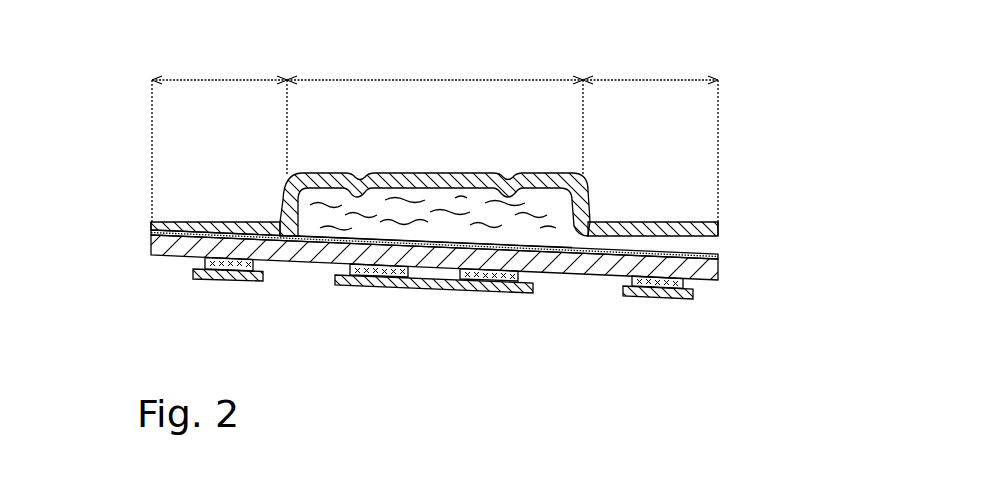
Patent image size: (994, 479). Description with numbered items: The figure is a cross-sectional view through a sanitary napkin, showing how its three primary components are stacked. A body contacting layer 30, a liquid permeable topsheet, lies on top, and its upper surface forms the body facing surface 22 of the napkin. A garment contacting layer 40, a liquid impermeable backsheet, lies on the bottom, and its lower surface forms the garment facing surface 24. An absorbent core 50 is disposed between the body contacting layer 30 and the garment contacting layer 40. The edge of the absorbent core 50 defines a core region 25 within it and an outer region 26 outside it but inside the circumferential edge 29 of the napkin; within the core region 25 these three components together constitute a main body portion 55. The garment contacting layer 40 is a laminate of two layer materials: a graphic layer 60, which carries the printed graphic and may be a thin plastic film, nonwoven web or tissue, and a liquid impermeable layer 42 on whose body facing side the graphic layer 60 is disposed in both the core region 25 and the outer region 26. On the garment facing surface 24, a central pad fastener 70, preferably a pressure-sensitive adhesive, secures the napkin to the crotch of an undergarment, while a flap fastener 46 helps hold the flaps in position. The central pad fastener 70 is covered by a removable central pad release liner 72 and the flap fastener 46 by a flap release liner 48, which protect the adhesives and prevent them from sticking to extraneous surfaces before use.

The body facing surface 22 is at (185, 148).
The garment facing surface 24 is at (438, 323).
The core region 25 is at (435, 80).
The outer region 26 is at (222, 80).
The circumferential edge 29 is at (141, 216).
The body contacting layer 30 is at (720, 230).
The garment contacting layer 40 is at (140, 243).
The liquid impermeable layer 42 is at (719, 266).
The flap fastener 46 is at (202, 263).
The flap release liner 48 is at (225, 282).
The absorbent core 50 is at (383, 210).
The main body portion 55 is at (472, 158).
The graphic layer 60 is at (720, 250).
The central pad fastener 70 is at (342, 272).
The central pad release liner 72 is at (441, 288).